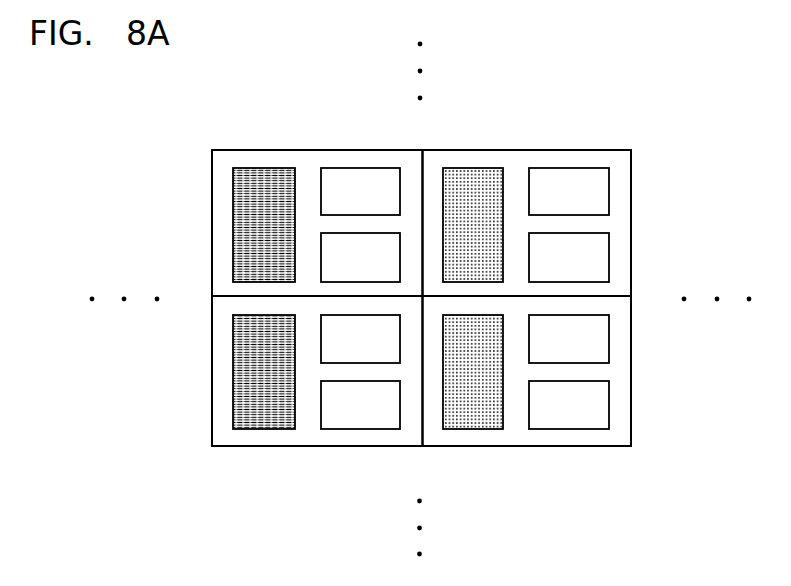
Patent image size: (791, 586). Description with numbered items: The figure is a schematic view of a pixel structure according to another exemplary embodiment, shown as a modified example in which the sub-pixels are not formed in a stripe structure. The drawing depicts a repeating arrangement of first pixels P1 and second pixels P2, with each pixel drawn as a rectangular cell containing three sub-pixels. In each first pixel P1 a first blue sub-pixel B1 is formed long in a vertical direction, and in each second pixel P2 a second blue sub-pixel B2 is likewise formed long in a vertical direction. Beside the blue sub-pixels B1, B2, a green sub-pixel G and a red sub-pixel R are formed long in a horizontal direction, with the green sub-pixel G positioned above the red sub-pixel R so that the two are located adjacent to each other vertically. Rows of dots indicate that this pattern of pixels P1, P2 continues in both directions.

The first pixel P1 is at (212, 224).
The second pixel P2 is at (631, 224).
The first blue sub-pixel B1 is at (264, 298).
The second blue sub-pixel B2 is at (473, 298).
The green sub-pixel G is at (465, 265).
The red sub-pixel R is at (465, 331).